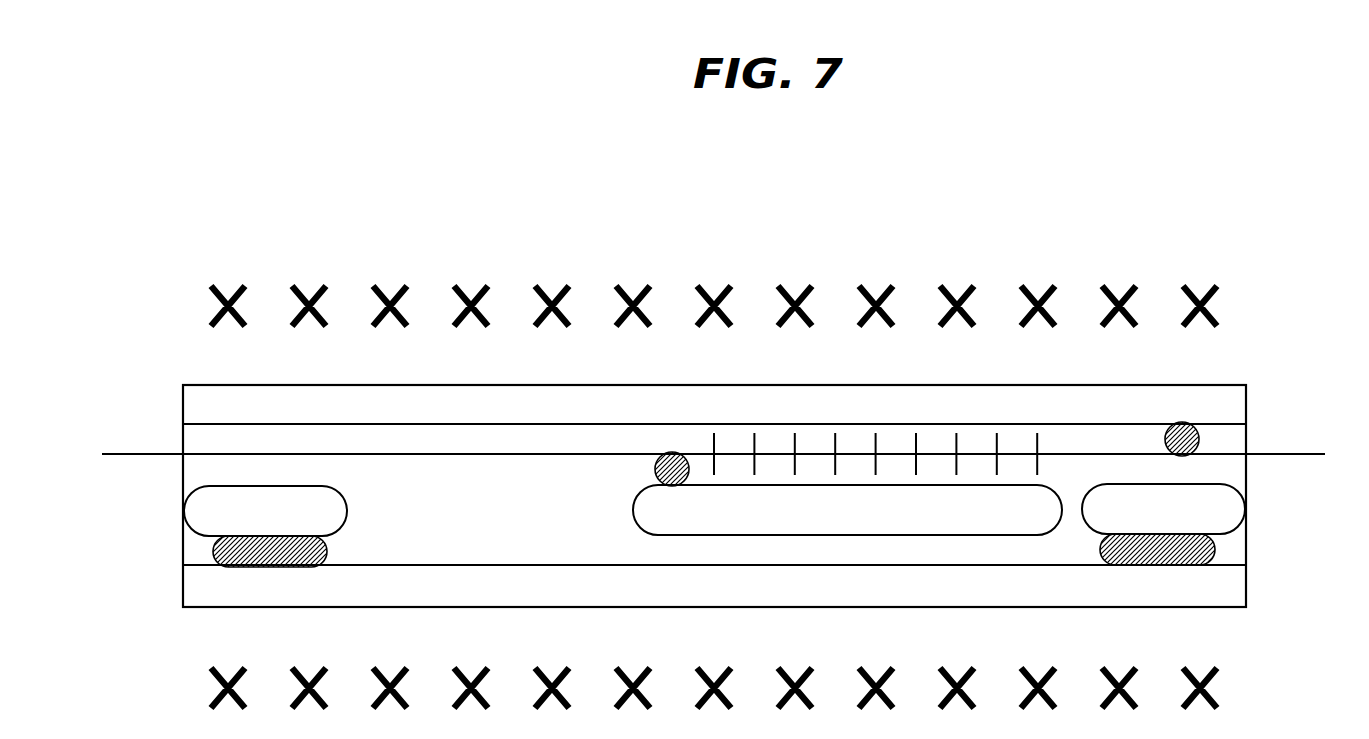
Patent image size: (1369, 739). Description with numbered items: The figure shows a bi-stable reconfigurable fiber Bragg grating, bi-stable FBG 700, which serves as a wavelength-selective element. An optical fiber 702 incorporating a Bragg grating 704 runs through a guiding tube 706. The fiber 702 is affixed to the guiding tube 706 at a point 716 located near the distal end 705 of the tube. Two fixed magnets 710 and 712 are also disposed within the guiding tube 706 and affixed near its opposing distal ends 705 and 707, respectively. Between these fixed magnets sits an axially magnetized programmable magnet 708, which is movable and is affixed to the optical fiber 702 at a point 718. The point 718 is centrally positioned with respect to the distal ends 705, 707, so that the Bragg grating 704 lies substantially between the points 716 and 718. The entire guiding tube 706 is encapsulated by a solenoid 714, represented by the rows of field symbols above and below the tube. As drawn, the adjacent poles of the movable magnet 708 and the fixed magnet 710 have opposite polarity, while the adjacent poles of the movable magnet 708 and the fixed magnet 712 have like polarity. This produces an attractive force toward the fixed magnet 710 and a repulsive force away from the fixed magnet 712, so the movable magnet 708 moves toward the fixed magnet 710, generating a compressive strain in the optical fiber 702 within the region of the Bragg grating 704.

The bi-stable FBG 700 is at (782, 176).
The optical fiber 702 is at (1260, 454).
The Bragg grating 704 is at (845, 453).
The distal end 705 is at (1247, 559).
The guiding tube 706 is at (215, 609).
The distal end 707 is at (183, 413).
The programmable magnet 708 is at (963, 483).
The fixed magnet 710 is at (1090, 530).
The fixed magnet 712 is at (196, 538).
The solenoid 714 is at (563, 290).
The point 716 is at (1178, 422).
The point 718 is at (672, 452).